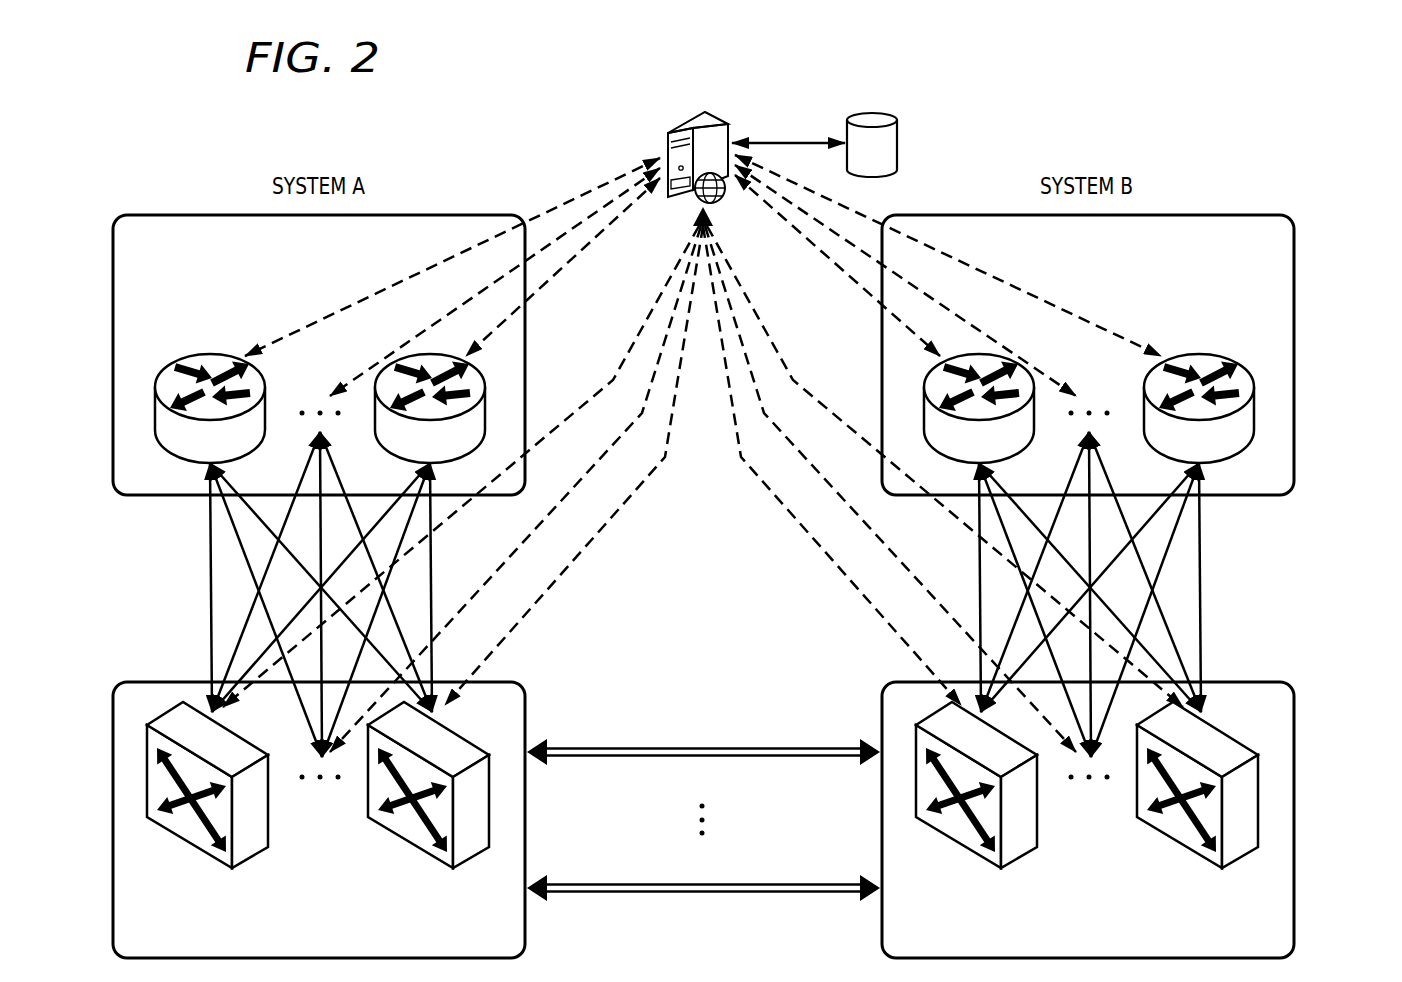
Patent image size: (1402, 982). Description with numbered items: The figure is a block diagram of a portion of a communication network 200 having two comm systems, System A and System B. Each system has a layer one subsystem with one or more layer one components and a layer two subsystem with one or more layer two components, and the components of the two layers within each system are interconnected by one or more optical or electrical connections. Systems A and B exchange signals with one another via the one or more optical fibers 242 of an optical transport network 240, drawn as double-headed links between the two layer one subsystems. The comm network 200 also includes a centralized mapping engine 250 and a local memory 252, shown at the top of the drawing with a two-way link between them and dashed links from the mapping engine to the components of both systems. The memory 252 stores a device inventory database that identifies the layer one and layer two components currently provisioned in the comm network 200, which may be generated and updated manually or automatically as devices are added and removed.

The communication network 200 is at (331, 126).
The optical transport network 240 is at (703, 714).
The optical fiber 242 is at (776, 747).
The centralized mapping engine 250 is at (667, 126).
The local memory 252 is at (899, 150).